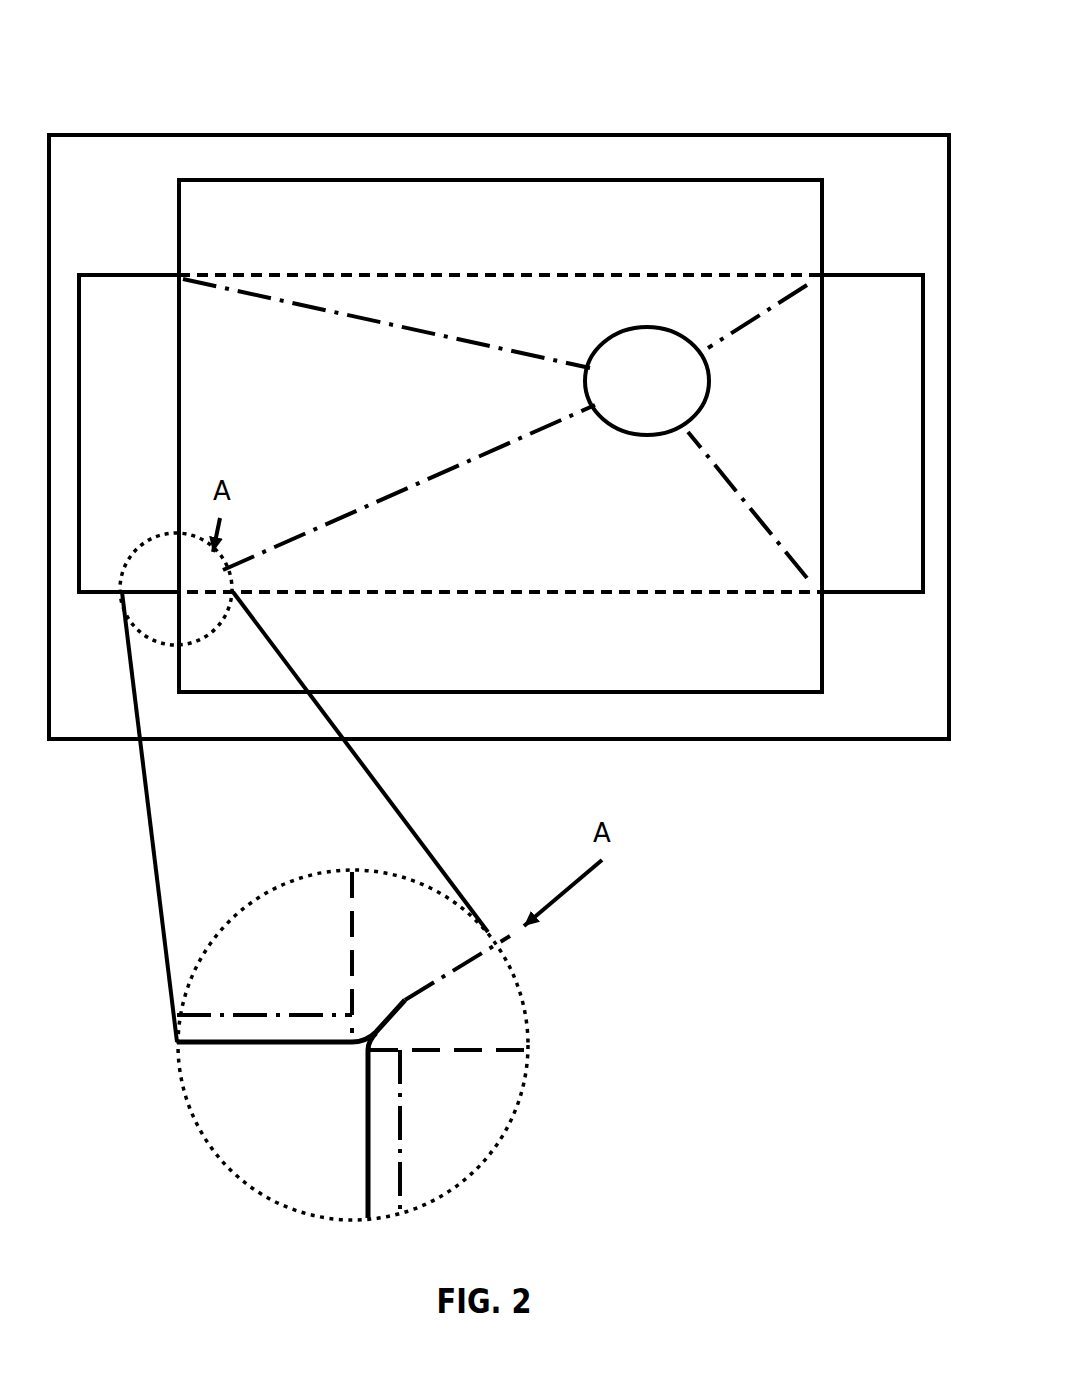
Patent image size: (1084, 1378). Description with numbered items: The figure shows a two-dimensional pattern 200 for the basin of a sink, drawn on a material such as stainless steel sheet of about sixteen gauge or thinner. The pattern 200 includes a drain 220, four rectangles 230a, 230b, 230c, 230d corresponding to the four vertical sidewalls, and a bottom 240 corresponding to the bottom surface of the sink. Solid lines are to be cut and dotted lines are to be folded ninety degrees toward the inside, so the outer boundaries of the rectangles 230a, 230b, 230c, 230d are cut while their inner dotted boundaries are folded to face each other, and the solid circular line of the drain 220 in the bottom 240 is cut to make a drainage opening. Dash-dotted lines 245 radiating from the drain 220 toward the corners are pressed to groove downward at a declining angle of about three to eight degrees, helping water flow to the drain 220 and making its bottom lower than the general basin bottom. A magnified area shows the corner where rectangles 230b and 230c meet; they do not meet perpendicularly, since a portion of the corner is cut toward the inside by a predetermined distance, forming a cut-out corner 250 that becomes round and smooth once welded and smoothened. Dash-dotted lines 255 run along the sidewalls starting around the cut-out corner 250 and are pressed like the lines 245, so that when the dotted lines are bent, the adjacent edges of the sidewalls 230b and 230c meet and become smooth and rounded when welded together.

The two-dimensional pattern 200 is at (256, 94).
The drain 220 is at (624, 396).
The rectangle 230a is at (475, 246).
The rectangle 230b is at (168, 446).
The rectangle 230c is at (470, 657).
The rectangle 230d is at (903, 459).
The bottom 240 is at (552, 535).
The dash-dotted lines 245 is at (341, 331).
The cut-out corner 250 is at (350, 1049).
The dash-dotted lines 255 is at (297, 998).